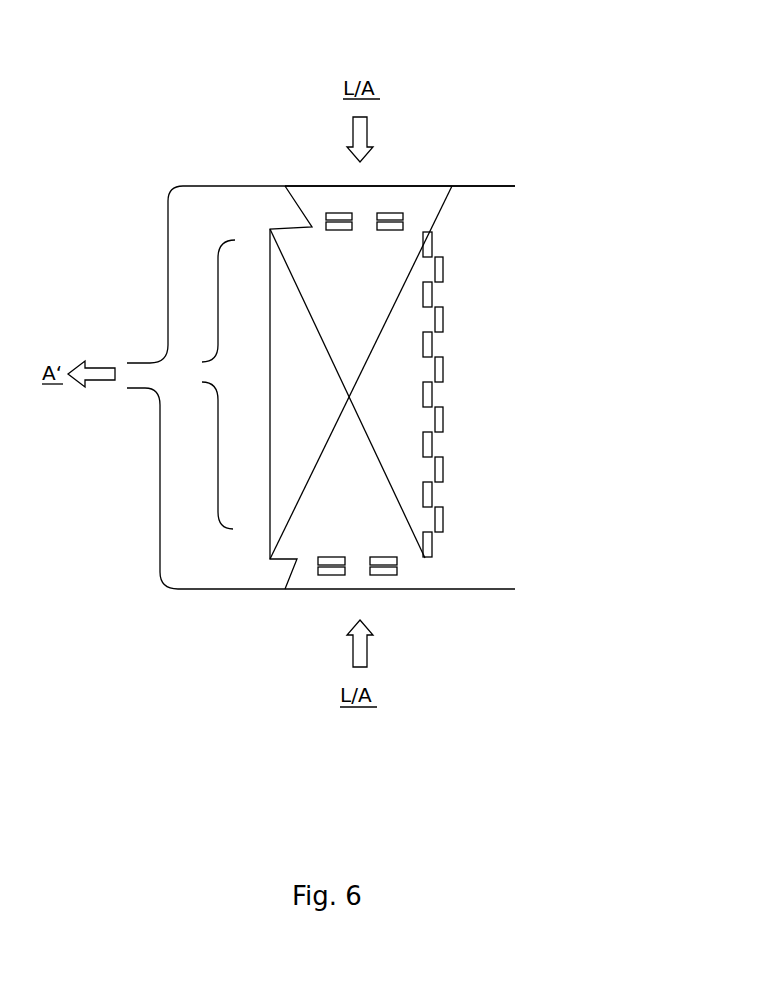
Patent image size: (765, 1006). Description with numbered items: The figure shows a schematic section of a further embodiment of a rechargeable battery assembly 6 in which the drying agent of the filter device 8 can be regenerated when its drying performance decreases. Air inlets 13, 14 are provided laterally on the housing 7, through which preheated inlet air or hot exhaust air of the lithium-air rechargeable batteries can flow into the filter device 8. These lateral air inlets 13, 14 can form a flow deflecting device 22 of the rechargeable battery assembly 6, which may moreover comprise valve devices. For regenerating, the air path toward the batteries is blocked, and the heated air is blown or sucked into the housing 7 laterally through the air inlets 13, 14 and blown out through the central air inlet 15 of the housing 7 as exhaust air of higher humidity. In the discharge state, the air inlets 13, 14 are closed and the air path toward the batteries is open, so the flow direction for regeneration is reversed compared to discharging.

The rechargeable battery assembly 6 is at (126, 134).
The housing 7 is at (179, 590).
The filter device 8 is at (402, 490).
The air inlet 13 is at (328, 205).
The air inlet 14 is at (316, 578).
The central air inlet 15 is at (145, 388).
The flow deflecting device 22 is at (409, 194).